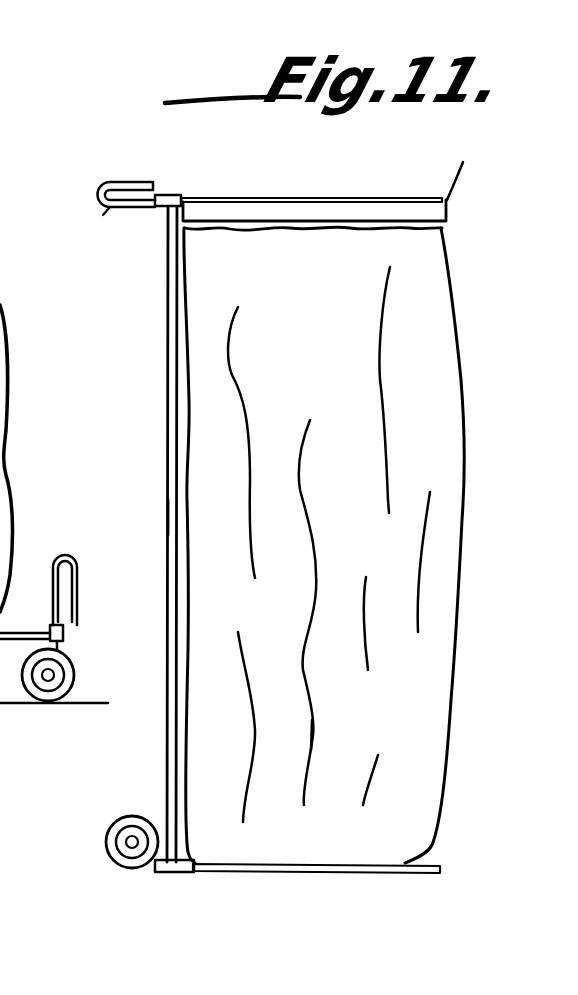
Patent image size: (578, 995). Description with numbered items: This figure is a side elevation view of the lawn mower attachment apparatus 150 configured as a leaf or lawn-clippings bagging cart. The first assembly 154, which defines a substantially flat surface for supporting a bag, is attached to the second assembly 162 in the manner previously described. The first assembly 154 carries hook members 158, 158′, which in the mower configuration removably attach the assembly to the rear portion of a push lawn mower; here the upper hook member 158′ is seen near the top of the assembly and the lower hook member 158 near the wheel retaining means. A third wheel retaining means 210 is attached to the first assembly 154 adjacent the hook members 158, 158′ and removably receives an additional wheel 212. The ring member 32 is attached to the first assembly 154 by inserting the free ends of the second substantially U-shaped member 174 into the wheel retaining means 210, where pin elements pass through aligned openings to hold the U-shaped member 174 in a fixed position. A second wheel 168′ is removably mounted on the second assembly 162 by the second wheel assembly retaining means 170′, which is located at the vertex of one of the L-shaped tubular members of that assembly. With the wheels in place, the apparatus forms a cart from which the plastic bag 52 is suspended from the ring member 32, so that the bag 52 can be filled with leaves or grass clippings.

The ring member 32 is at (441, 183).
The bag 52 is at (430, 774).
The lawn mower attachment apparatus 150 is at (150, 390).
The first assembly 154 is at (167, 307).
The hook member 158 is at (77, 578).
The hook member 158′ is at (111, 216).
The second assembly 162 is at (168, 518).
The second wheel 168′ is at (120, 822).
The second wheel assembly retaining means 170′ is at (154, 868).
The second substantially U-shaped member 174 is at (463, 164).
The third wheel retaining means 210 is at (178, 196).
The additional wheel 212 is at (57, 703).